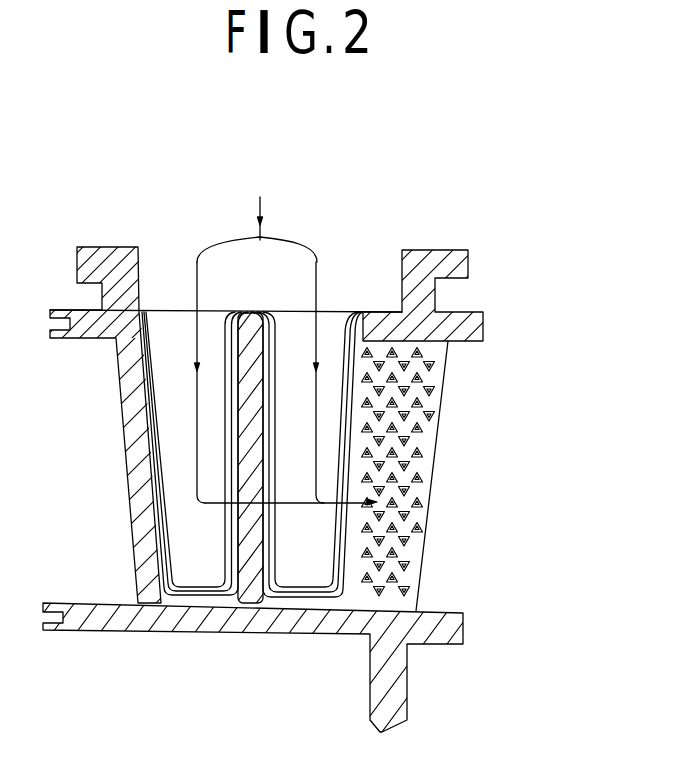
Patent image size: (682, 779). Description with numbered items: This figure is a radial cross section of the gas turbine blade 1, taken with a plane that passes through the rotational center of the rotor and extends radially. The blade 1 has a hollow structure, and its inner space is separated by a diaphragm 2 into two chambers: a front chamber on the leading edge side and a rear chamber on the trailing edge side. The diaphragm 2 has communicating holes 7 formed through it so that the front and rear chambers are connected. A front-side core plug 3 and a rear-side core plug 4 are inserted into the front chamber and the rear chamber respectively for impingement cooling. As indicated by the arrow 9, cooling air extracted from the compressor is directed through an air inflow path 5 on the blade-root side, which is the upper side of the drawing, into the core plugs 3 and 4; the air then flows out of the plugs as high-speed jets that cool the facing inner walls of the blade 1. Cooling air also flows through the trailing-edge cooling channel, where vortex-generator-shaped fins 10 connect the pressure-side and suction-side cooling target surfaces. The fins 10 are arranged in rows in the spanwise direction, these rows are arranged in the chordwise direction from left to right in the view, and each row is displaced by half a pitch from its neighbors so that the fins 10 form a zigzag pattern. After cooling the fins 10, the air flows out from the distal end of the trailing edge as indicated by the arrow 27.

The gas turbine blade 1 is at (440, 661).
The diaphragm 2 is at (248, 405).
The front-side core plug 3 is at (152, 385).
The rear-side core plug 4 is at (292, 590).
The air inflow path 5 is at (163, 250).
The communicating holes 7 is at (232, 505).
The arrow (cooling air flow) 9 is at (263, 242).
The vortex-generator-shaped fins 10 is at (430, 405).
The arrow (cooling air outflow) 27 is at (428, 496).